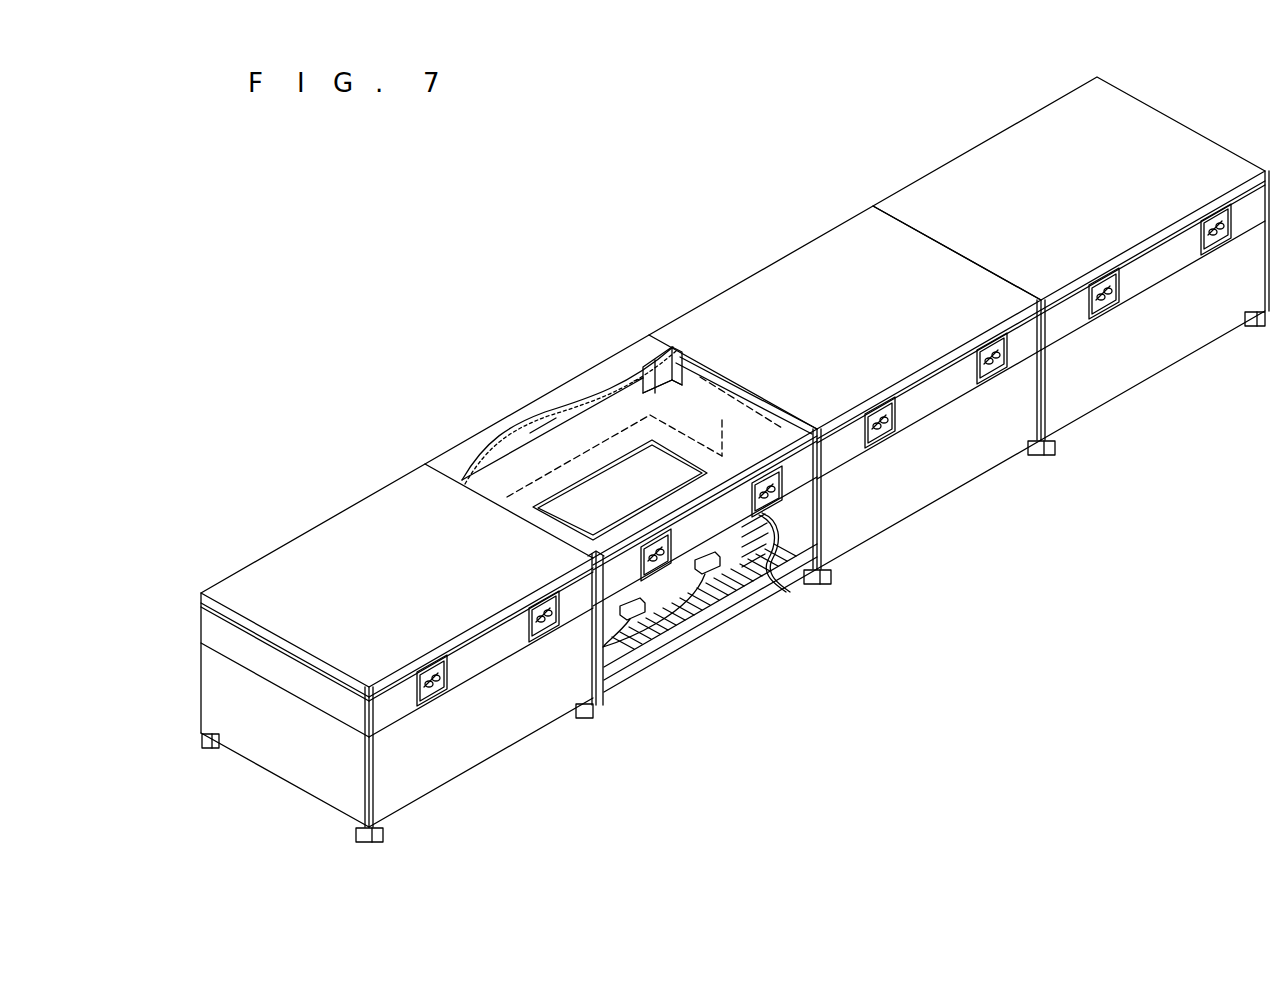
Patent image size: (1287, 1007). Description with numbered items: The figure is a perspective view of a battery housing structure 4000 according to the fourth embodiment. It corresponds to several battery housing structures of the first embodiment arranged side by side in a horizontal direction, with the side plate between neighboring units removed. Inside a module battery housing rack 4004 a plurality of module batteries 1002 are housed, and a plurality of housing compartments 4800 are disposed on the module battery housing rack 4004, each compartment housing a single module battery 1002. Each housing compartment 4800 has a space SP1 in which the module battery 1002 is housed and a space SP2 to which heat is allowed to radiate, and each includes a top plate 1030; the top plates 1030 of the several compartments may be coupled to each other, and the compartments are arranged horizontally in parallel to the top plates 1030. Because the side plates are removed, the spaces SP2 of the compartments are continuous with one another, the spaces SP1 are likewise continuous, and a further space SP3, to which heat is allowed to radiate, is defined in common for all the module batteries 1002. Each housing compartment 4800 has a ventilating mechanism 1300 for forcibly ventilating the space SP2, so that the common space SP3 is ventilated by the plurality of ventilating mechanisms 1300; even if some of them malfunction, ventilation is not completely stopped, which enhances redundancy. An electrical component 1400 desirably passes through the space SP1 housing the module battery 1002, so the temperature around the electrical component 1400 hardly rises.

The battery housing structure 4000 is at (1101, 78).
The housing compartment 4800 is at (987, 144).
The module battery housing rack 4004 is at (810, 590).
The ventilating mechanism 1300 is at (753, 487).
The electrical component 1400 is at (633, 650).
The module battery 1002 is at (700, 400).
The top plate 1030 is at (510, 460).
The space in which the module battery is housed SP1 is at (700, 610).
The space to which heat is allowed to radiate SP2 is at (543, 430).
The further space to which heat is allowed to radiate SP3 is at (643, 377).